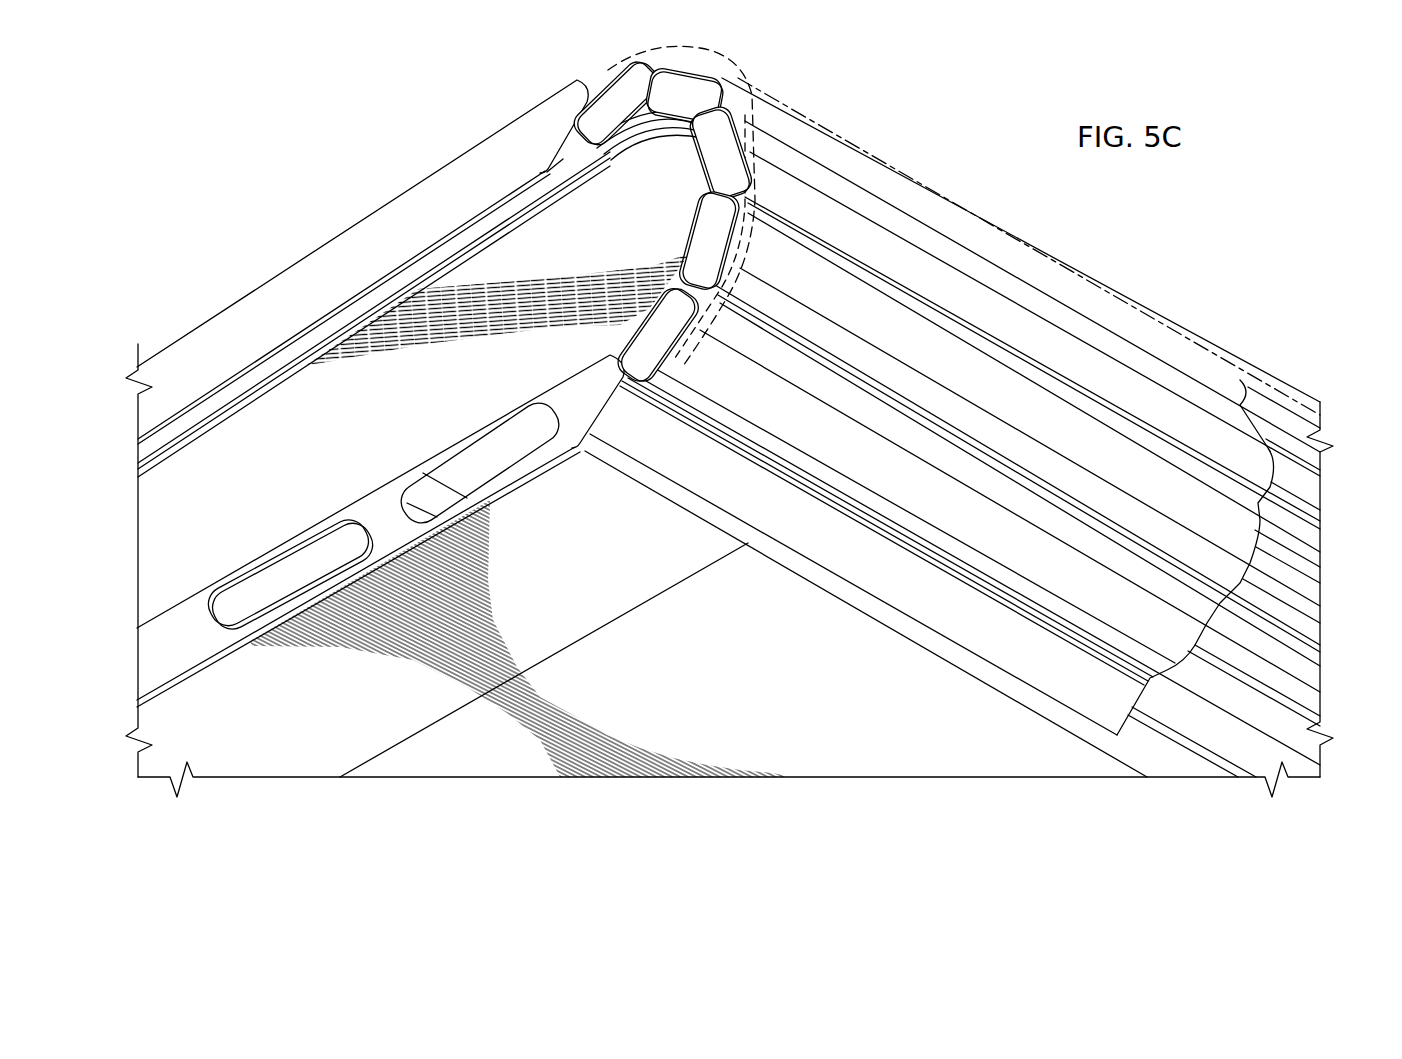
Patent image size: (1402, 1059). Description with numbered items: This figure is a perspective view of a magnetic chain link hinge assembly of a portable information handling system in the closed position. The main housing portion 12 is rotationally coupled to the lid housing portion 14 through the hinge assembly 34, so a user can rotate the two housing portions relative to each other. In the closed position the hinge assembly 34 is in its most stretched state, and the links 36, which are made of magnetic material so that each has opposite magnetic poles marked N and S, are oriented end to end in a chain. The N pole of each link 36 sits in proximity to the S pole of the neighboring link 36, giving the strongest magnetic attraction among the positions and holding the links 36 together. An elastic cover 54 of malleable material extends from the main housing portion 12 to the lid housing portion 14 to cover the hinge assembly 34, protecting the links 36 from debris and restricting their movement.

The main housing portion 12 is at (368, 495).
The lid housing portion 14 is at (330, 243).
The hinge assembly 34 is at (938, 118).
The links 36 is at (613, 72).
The elastic cover 54 is at (847, 143).